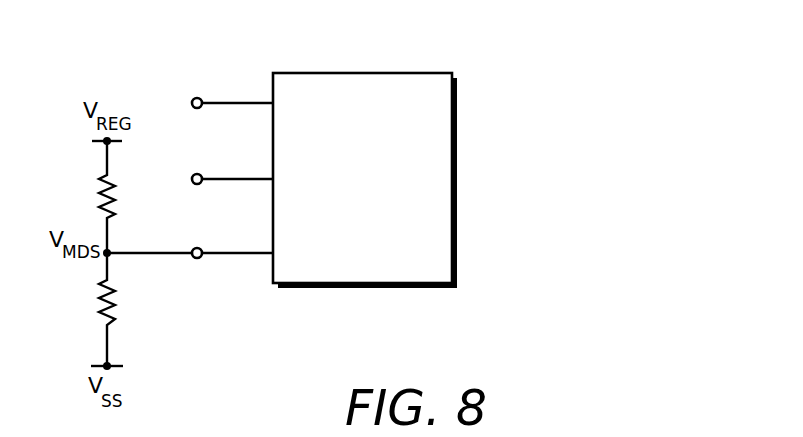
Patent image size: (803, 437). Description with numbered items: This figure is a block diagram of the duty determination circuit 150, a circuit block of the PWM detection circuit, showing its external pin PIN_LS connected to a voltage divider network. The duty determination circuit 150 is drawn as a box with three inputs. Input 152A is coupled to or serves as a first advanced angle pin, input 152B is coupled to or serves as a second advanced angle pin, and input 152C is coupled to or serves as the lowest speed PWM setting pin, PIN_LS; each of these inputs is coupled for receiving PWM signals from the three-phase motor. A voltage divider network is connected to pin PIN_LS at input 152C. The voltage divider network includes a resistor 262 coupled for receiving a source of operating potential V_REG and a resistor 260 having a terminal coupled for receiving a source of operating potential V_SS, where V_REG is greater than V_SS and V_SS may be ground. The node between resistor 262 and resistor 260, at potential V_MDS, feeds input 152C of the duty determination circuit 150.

The duty determination circuit 150 is at (413, 73).
The input 152A is at (235, 102).
The input 152B is at (235, 178).
The input 152C is at (235, 252).
The resistor 260 is at (100, 299).
The resistor 262 is at (100, 194).